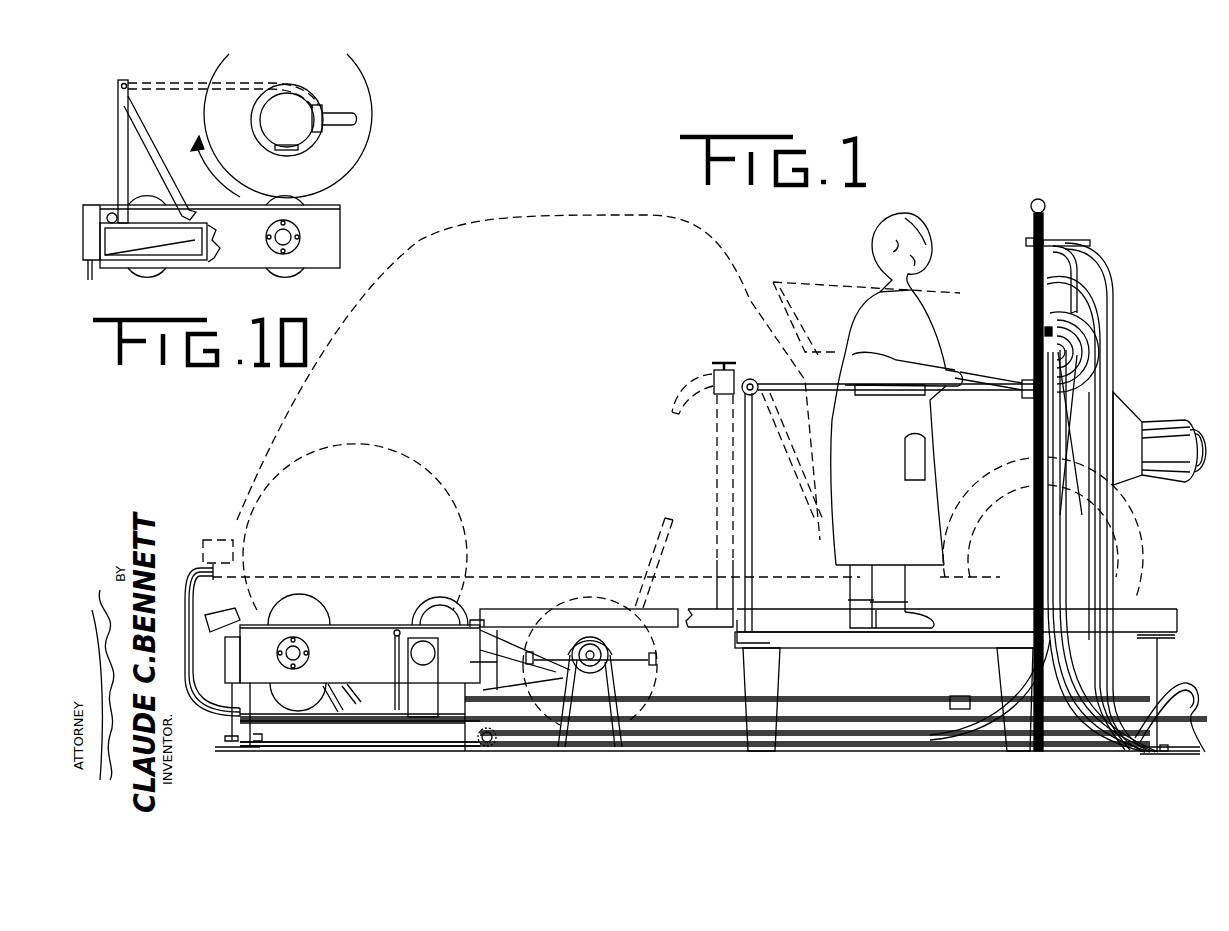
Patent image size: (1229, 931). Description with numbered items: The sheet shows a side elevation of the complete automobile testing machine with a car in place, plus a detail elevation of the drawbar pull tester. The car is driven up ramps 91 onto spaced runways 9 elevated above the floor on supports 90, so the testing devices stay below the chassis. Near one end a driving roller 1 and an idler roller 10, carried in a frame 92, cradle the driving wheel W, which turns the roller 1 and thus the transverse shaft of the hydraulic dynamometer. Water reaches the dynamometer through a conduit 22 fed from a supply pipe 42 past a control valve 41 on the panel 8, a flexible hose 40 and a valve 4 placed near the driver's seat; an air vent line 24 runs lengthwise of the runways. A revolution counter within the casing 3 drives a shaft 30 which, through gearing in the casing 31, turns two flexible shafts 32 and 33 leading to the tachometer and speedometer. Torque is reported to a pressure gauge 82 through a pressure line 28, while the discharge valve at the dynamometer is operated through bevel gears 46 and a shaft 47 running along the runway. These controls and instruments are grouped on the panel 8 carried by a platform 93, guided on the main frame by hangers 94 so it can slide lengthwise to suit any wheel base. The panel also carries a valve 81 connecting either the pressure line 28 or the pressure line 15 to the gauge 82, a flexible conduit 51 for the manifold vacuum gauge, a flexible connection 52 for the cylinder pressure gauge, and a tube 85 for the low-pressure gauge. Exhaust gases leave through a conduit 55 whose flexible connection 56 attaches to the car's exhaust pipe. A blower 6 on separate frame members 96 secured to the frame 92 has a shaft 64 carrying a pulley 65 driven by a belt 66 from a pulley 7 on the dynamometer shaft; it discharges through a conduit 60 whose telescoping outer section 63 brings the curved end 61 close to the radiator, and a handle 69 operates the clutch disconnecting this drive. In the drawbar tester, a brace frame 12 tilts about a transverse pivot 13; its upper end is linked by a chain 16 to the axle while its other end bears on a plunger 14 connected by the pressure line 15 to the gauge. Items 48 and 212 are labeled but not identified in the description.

In FIG. 10, the roller 1 is at (292, 283).
In FIG. 1, the roller 1 is at (418, 610).
In FIG. 1, the casing 3 is at (420, 703).
In FIG. 1, the valve 4 is at (710, 365).
In FIG. 1, the blower 6 is at (590, 600).
In FIG. 1, the pulley 7 is at (444, 614).
In FIG. 1, the panel 8 is at (1030, 208).
In FIG. 1, the runway 9 is at (1140, 622).
In FIG. 10, the roller 10 is at (150, 280).
In FIG. 1, the roller 10 is at (292, 618).
In FIG. 10, the brace frame 12 is at (118, 133).
In FIG. 10, the transverse pivot 13 is at (112, 213).
In FIG. 10, the plunger 14 is at (230, 222).
In FIG. 10, the pressure line 15 is at (210, 262).
In FIG. 1, the pressure line 15 is at (358, 686).
In FIG. 10, the chain 16 is at (172, 80).
In FIG. 1, the conduit 22 is at (225, 675).
In FIG. 1, the air vent line 24 is at (476, 664).
In FIG. 1, the pressure line 28 is at (1113, 292).
In FIG. 1, the shaft 30 is at (668, 697).
In FIG. 1, the casing 31 is at (960, 694).
In FIG. 1, the flexible shaft 32 is at (1100, 325).
In FIG. 1, the flexible shaft 33 is at (1090, 673).
In FIG. 1, the flexible hose 40 is at (665, 525).
In FIG. 1, the control valve 41 is at (1042, 330).
In FIG. 1, the pipe 42 is at (1186, 754).
In FIG. 1, the bevel gears 46 is at (490, 750).
In FIG. 1, the shaft 47 is at (640, 750).
In FIG. 1, the rod 48 is at (986, 750).
In FIG. 1, the flexible conduit 51 is at (1090, 362).
In FIG. 1, the flexible connection 52 is at (998, 375).
In FIG. 1, the conduit 55 is at (335, 742).
In FIG. 1, the flexible connection 56 is at (207, 534).
In FIG. 1, the conduit 60 is at (897, 712).
In FIG. 1, the end 61 is at (1130, 438).
In FIG. 1, the outer section 63 is at (1176, 486).
In FIG. 1, the shaft 64 is at (610, 650).
In FIG. 1, the pulley 65 is at (595, 642).
In FIG. 1, the belt 66 is at (472, 616).
In FIG. 1, the handle 69 is at (396, 630).
In FIG. 1, the valve 81 is at (1027, 243).
In FIG. 1, the pressure gauge 82 is at (1045, 235).
In FIG. 1, the tube 85 is at (1090, 240).
In FIG. 1, the support 90 is at (252, 750).
In FIG. 1, the ramp 91 is at (228, 612).
In FIG. 1, the frame 92 is at (360, 654).
In FIG. 1, the platform 93 is at (790, 632).
In FIG. 1, the hanger 94 is at (735, 620).
In FIG. 1, the frame member 96 is at (518, 640).
In FIG. 1, the hose 212 is at (338, 674).
In FIG. 1, the wheel W is at (290, 596).